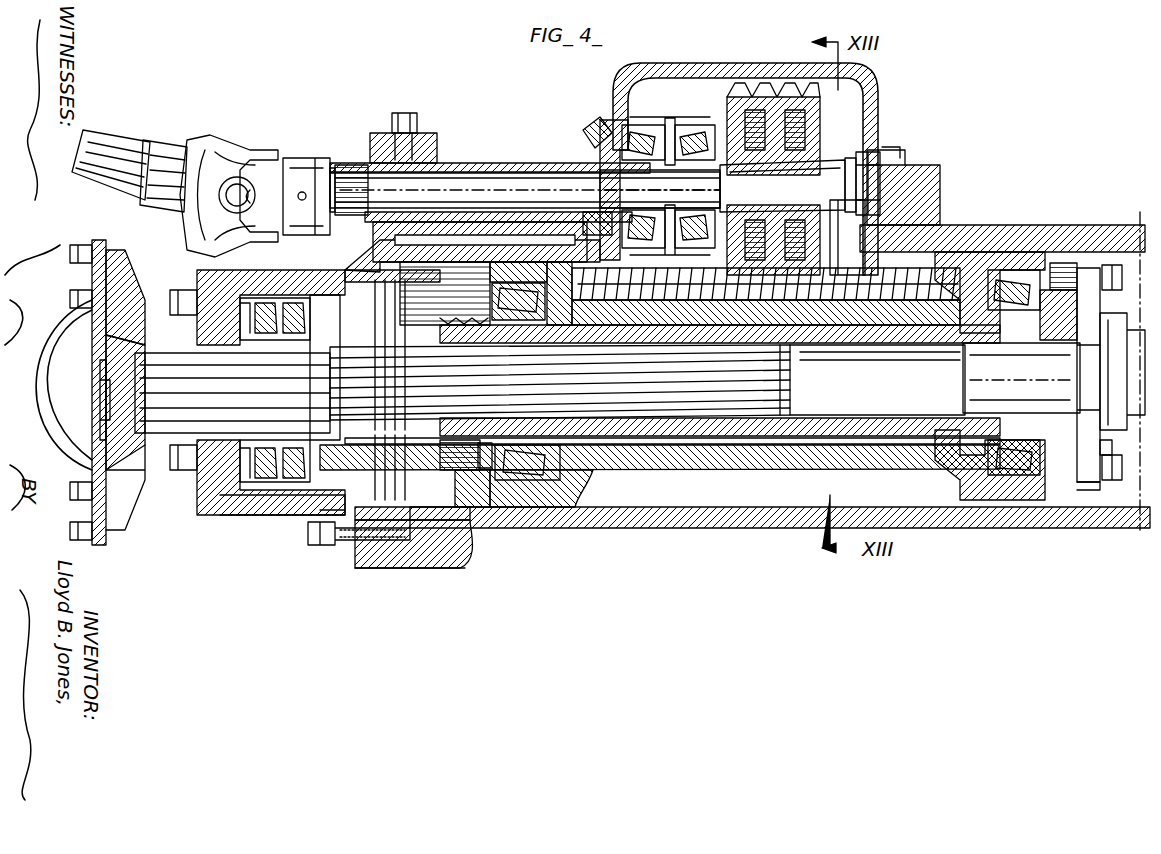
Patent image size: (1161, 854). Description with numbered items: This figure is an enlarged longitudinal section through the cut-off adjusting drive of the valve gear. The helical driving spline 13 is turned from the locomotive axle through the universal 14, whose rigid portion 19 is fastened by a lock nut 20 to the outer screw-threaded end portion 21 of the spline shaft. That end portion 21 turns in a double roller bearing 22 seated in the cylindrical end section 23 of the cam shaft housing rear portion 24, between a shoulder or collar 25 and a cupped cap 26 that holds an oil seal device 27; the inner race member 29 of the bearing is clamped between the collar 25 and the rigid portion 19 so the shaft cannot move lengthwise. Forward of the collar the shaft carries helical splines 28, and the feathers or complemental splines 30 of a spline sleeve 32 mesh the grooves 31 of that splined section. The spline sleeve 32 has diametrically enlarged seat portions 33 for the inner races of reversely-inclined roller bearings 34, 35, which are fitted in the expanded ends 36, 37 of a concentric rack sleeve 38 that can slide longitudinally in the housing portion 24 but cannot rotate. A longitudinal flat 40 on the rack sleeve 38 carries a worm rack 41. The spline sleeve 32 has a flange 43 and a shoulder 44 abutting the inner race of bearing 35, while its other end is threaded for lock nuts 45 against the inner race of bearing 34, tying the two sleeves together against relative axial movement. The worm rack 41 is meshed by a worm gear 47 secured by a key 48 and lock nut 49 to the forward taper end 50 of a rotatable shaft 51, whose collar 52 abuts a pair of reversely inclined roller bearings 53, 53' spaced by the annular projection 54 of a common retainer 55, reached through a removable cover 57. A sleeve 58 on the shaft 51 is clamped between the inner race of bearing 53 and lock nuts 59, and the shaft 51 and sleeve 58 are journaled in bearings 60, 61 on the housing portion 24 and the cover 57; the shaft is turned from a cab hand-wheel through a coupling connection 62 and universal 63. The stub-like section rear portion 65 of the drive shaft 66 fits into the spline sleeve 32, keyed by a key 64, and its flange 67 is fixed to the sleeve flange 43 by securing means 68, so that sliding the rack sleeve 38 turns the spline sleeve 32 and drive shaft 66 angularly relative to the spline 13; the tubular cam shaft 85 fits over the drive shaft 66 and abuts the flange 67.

The helical driving spline 13 is at (360, 355).
The universal 14 is at (55, 302).
The rigid portion 19 is at (140, 335).
The lock nut 20 is at (100, 410).
The outer screw-threaded end portion 21 is at (100, 395).
The double roller bearing 22 is at (318, 452).
The cylindrical end section 23 is at (255, 510).
The cam shaft housing rear portion 24 is at (915, 243).
The shoulder or collar 25 is at (318, 360).
The cupped cap 26 is at (205, 278).
The oil seal device 27 is at (200, 478).
The helical splines 28 is at (388, 410).
The inner race member 29 is at (320, 437).
The feathers or complemental splines 30 is at (442, 334).
The grooves 31 is at (372, 400).
The spline sleeve 32 is at (686, 450).
The diametrically enlarged seat portions 33 is at (495, 460).
The roller bearing 34 is at (510, 478).
The roller bearing 35 is at (1010, 270).
The expanded end 36 is at (537, 500).
The expanded end 37 is at (992, 258).
The bearing or rack sleeve 38 is at (797, 462).
The longitudinal flat 40 is at (877, 340).
The worm rack 41 is at (848, 270).
The flange 43 is at (1062, 265).
The shoulder 44 is at (440, 452).
The lock nuts 45 is at (478, 460).
The worm gear 47 is at (775, 83).
The key 48 is at (850, 158).
The lock nut 49 is at (872, 155).
The forward taper end 50 is at (782, 186).
The rotatable shaft 51 is at (525, 190).
The collar 52 is at (720, 190).
The roller bearing 53 is at (643, 164).
The roller bearing 53' is at (698, 164).
The annular projection 54 is at (670, 118).
The retainer 55 is at (615, 118).
The removable cover 57 is at (730, 65).
The sleeve 58 is at (505, 165).
The lock nuts 59 is at (345, 165).
The bearing 60 is at (430, 143).
The bearing 61 is at (583, 143).
The coupling connection 62 is at (128, 150).
The universal 63 is at (300, 130).
The key 64 is at (1045, 410).
The stub-like section rear portion 65 is at (960, 386).
The drive shaft 66 is at (1108, 445).
The flange 67 is at (1088, 490).
The securing means 68 is at (1115, 278).
The tubular cam shaft 85 is at (1122, 325).